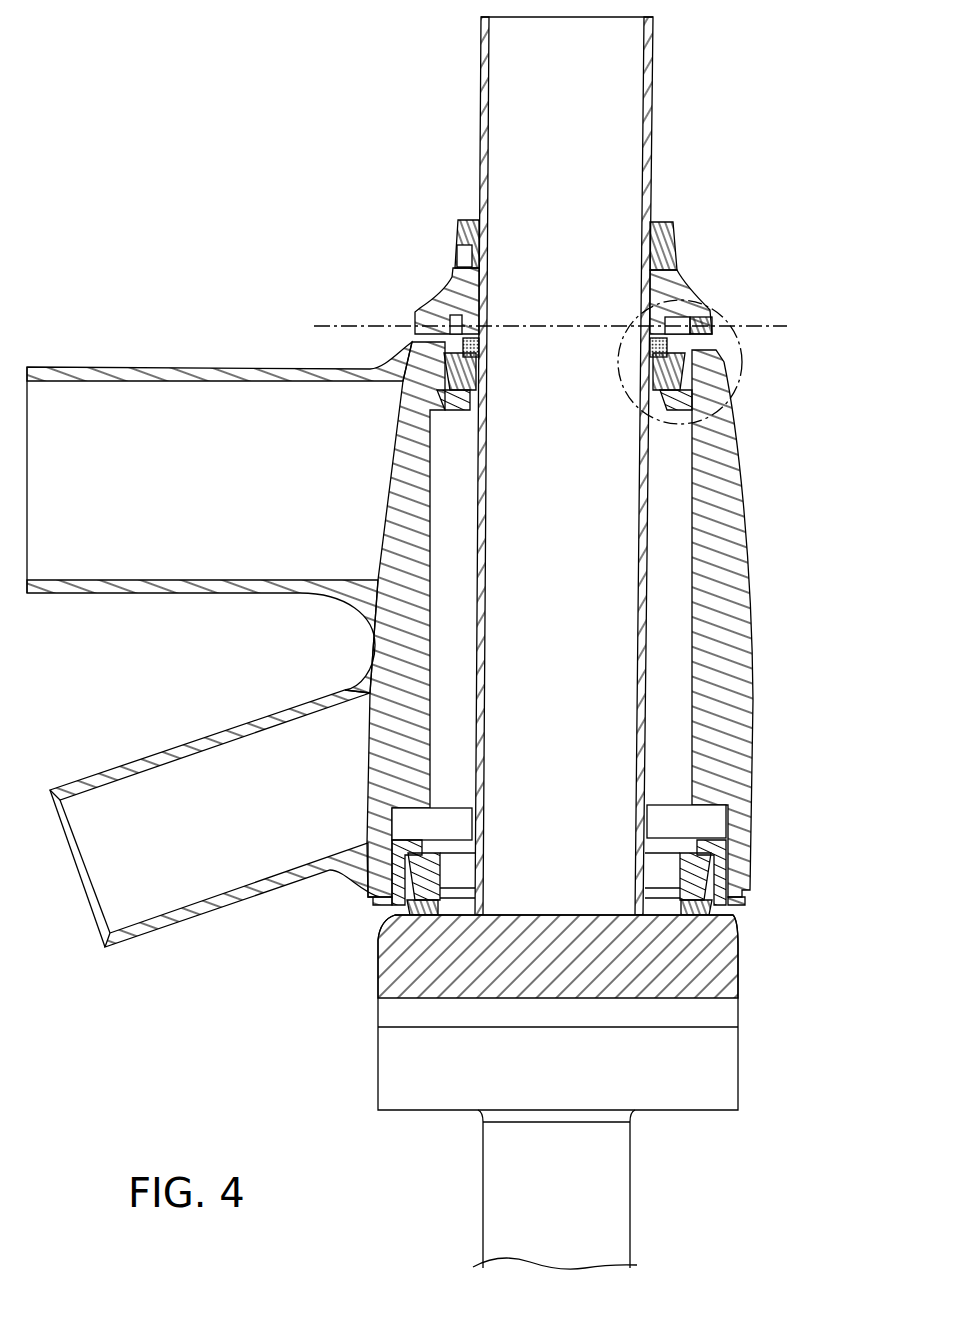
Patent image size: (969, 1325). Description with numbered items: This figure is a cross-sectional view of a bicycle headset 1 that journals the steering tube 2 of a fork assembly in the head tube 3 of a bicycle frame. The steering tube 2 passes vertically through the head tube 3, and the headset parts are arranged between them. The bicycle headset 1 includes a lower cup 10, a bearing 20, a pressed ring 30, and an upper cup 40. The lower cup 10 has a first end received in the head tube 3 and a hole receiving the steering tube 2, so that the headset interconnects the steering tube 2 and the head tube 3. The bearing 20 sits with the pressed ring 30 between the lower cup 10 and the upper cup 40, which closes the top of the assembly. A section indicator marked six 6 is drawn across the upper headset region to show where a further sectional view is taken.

The bicycle headset 1 is at (322, 130).
The steering tube 2 is at (653, 112).
The head tube 3 is at (728, 537).
The lower cup 10 is at (720, 425).
The bearing 20 is at (700, 383).
The pressed ring 30 is at (712, 355).
The upper cup 40 is at (685, 283).
The section line 6- 6 is at (314, 325).